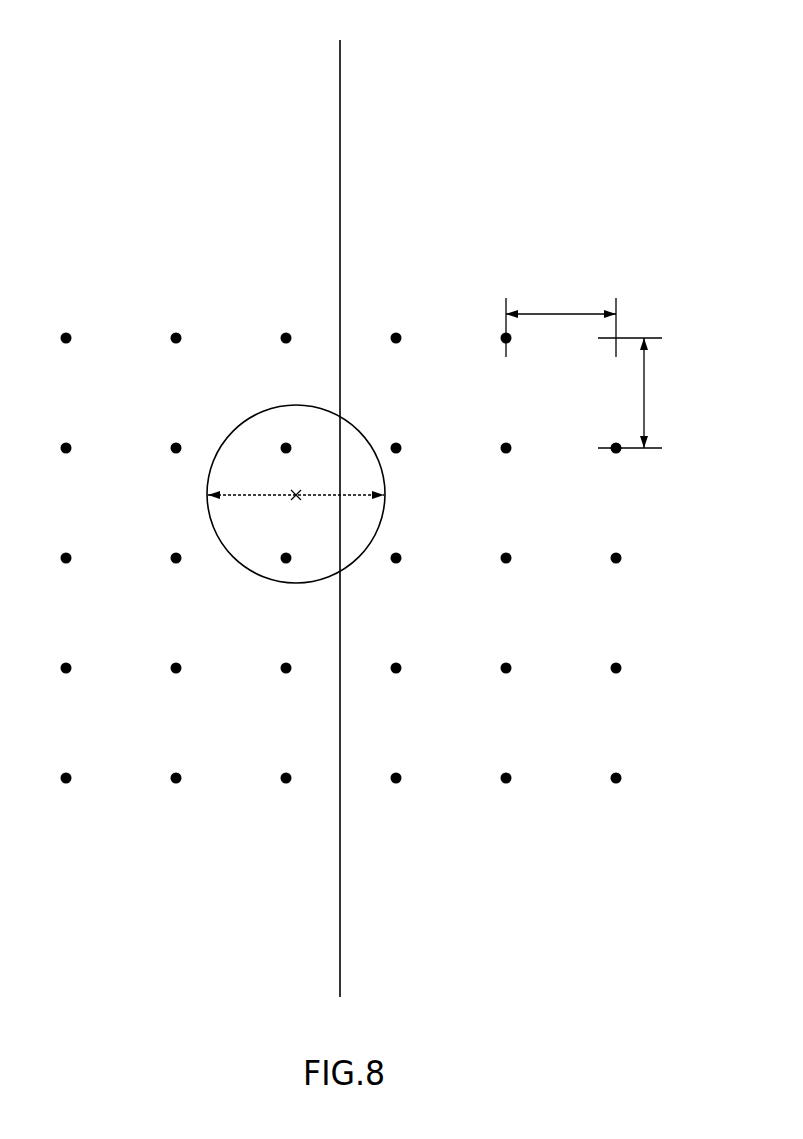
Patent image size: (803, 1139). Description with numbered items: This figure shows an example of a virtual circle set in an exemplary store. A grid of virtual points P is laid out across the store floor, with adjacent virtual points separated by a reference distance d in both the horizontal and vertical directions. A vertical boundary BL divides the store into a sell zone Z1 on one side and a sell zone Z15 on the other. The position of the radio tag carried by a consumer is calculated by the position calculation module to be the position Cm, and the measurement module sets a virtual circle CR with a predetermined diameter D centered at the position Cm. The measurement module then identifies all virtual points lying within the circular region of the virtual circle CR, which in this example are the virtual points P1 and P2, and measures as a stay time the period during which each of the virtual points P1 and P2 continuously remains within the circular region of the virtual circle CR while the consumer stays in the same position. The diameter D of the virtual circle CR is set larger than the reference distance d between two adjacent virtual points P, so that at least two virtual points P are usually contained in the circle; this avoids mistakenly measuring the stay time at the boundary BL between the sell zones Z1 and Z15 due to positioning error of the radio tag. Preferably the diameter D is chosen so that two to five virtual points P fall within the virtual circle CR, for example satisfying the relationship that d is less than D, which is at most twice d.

The boundary BL is at (341, 60).
The sell zone Z1 is at (330, 113).
The sell zone Z15 is at (350, 113).
The virtual circle CR is at (247, 418).
The diameter D is at (296, 484).
The position Cm is at (282, 506).
The virtual point P1 is at (284, 572).
The virtual point P2 is at (287, 432).
The virtual point P is at (630, 552).
The reference distance d is at (586, 368).